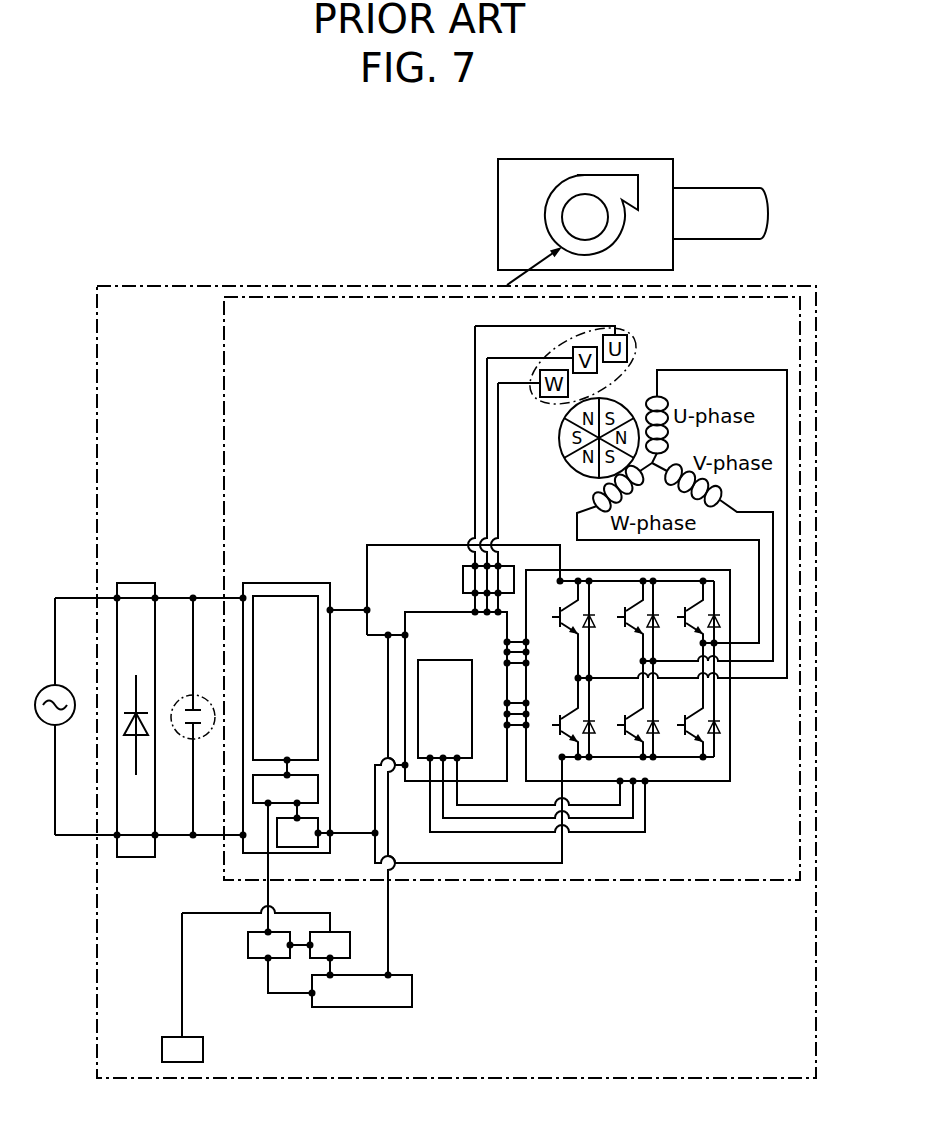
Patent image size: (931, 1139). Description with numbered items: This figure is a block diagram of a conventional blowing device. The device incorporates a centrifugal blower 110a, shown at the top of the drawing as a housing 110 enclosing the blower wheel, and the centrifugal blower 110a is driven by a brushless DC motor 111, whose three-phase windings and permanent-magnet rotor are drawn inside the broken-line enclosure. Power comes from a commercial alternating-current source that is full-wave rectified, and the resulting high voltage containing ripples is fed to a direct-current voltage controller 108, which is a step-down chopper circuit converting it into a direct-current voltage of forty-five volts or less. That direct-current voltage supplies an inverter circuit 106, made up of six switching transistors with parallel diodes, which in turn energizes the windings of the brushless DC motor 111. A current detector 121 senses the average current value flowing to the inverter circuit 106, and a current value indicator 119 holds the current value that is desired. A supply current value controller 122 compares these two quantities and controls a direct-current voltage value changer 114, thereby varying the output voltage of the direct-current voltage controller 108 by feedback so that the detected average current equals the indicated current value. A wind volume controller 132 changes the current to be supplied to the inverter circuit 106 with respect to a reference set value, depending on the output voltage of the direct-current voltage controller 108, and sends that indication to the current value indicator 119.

The inverter circuit 106 is at (730, 758).
The direct-current voltage controller 108 is at (334, 710).
The electric blower 110 is at (523, 187).
The centrifugal blower 110a is at (557, 227).
The brushless DC motor 111 is at (223, 370).
The direct-current voltage value changer 114 is at (303, 597).
The current value indicator 119 is at (248, 945).
The current detector 121 is at (318, 842).
The supply current value controller 122 is at (255, 793).
The wind volume controller 132 is at (413, 997).